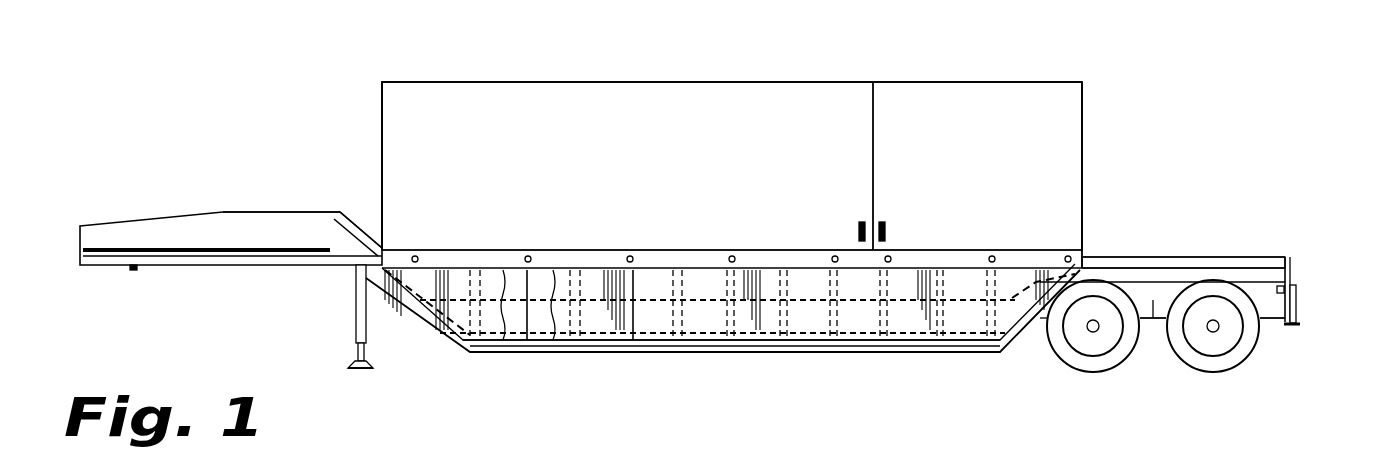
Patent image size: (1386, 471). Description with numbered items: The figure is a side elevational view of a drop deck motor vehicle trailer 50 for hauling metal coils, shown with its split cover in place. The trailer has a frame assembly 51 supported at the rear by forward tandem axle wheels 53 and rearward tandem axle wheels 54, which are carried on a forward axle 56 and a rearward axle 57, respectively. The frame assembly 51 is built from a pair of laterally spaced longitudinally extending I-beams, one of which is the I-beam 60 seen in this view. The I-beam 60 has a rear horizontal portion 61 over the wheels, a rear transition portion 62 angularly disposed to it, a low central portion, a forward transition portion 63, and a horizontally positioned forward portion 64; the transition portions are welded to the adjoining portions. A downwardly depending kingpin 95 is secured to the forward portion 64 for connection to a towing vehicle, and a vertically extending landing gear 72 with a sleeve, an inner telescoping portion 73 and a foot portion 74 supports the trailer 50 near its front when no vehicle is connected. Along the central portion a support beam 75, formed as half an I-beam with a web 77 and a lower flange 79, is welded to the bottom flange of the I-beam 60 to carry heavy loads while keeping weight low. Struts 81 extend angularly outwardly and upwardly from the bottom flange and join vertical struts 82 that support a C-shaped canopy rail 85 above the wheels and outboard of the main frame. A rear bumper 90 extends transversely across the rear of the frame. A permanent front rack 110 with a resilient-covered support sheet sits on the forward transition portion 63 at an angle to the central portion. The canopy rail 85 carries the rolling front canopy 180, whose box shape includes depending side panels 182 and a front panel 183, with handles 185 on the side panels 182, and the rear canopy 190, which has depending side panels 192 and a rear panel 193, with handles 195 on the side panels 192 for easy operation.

The motor vehicle trailer 50 is at (833, 178).
The frame assembly 51 is at (1124, 236).
The forward tandem axle wheels 53 is at (1093, 373).
The rearward tandem axle wheels 54 is at (1213, 373).
The forward axle 56 is at (1088, 334).
The rearward axle 57 is at (1218, 332).
The I-beam 60 is at (300, 208).
The rear horizontal portion 61 is at (1156, 302).
The rear transition portion 62 is at (1015, 316).
The forward transition portion 63 is at (420, 297).
The forward portion 64 is at (160, 235).
The landing gear 72 is at (355, 300).
The inner telescoping portion 73 is at (358, 350).
The foot portion 74 is at (350, 366).
The support beam 75 is at (787, 347).
The web 77 is at (843, 344).
The lower flange 79 is at (915, 353).
The strut 81 is at (530, 318).
The strut 82 is at (521, 272).
The canopy rail 85 is at (236, 262).
The rear bumper 90 is at (1297, 305).
The kingpin 95 is at (134, 272).
The front rack 110 is at (358, 215).
The front canopy 180 is at (648, 78).
The side panel 182 is at (627, 128).
The front panel 183 is at (380, 93).
The handle 185 is at (857, 232).
The rear canopy 190 is at (963, 78).
The side panel 192 is at (977, 129).
The rear panel 193 is at (1082, 167).
The handle 195 is at (887, 232).